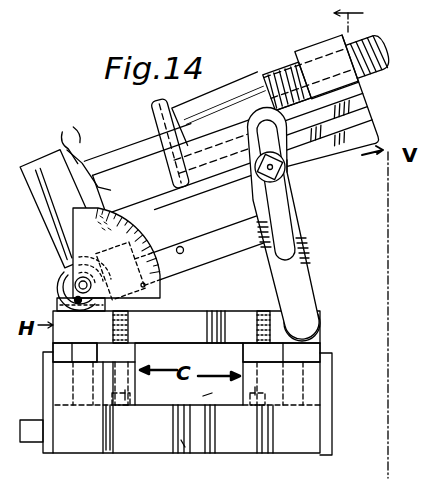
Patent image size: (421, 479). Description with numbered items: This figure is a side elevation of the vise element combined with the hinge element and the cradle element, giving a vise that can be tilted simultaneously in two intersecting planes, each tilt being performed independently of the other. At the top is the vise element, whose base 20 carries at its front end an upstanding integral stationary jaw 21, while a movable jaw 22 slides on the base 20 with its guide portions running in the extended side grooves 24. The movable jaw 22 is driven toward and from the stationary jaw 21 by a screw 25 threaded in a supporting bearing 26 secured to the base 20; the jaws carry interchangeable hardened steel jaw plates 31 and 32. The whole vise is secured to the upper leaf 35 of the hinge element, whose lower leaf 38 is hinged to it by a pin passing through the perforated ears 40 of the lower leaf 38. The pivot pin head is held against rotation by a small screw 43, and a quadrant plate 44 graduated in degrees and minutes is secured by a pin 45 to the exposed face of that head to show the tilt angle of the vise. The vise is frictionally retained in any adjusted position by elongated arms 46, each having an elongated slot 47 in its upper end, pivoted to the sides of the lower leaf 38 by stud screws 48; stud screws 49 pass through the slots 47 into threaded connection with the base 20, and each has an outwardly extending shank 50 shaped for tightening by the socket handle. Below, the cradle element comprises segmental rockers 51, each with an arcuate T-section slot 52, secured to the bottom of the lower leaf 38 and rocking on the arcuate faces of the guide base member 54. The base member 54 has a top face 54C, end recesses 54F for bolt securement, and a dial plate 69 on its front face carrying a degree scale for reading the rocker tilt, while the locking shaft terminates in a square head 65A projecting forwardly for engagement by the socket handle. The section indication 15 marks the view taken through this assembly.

The section line indicator 15 is at (364, 19).
The base 20 is at (363, 133).
The stationary jaw 21 is at (52, 155).
The movable jaw 22 is at (215, 96).
The side grooves 24 is at (358, 112).
The screw 25 is at (277, 78).
The supporting bearing 26 is at (318, 58).
The jaw plate 31 is at (80, 137).
The jaw plate 32 is at (150, 108).
The upper leaf 35 is at (252, 240).
The lower leaf 38 is at (260, 307).
The perforated ears 40 is at (55, 304).
The small screw 43 is at (72, 294).
The quadrant plate 44 is at (162, 292).
The pin 45 is at (79, 285).
The elongated arm 46 is at (300, 272).
The elongated slot 47 is at (287, 218).
The stud screw 48 is at (308, 306).
The stud screw 49 is at (288, 180).
The shank 50 is at (310, 168).
The rocker 51 is at (125, 354).
The arcuate slot 52 is at (80, 353).
The guide base member 54 is at (130, 390).
The top face 54C is at (203, 396).
The recesses 54F is at (190, 445).
The square head 65A is at (31, 428).
The dial plate 69 is at (48, 362).